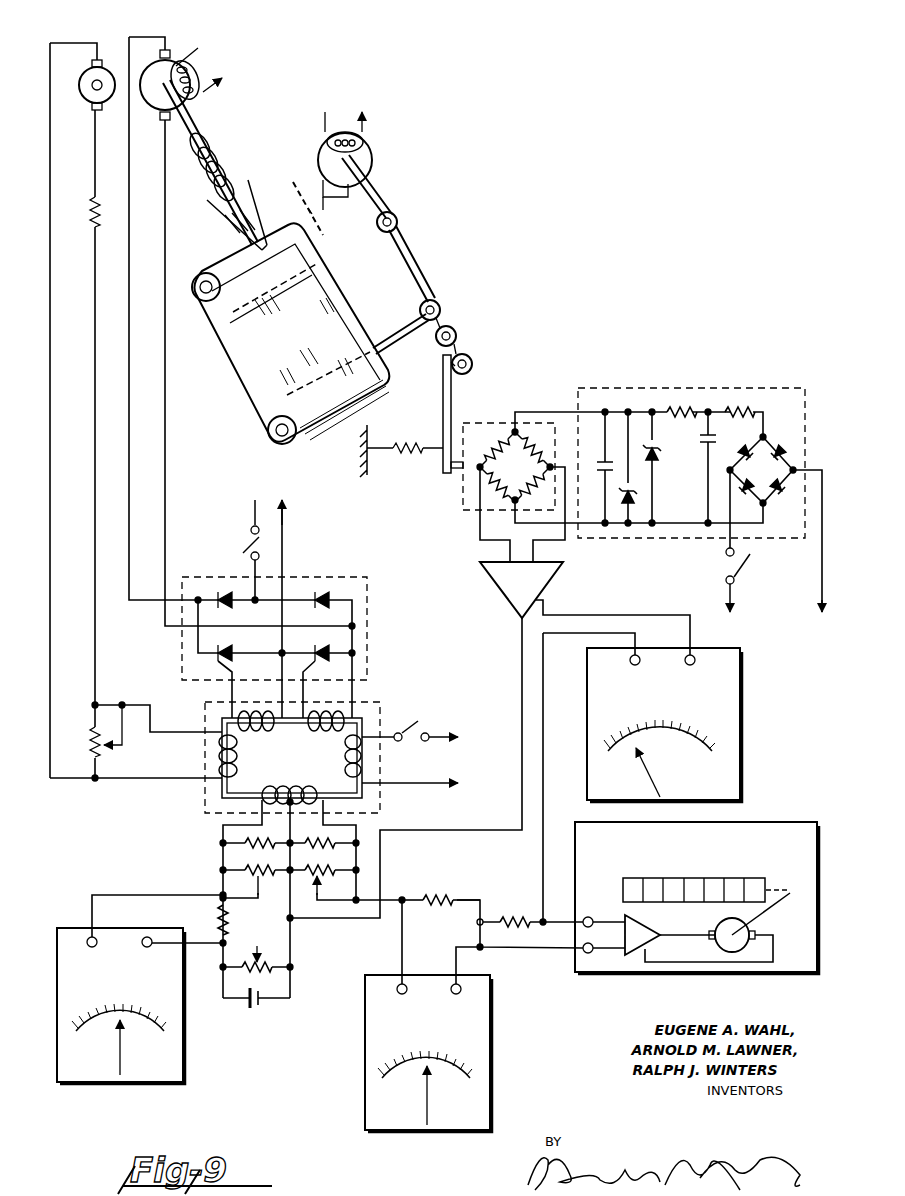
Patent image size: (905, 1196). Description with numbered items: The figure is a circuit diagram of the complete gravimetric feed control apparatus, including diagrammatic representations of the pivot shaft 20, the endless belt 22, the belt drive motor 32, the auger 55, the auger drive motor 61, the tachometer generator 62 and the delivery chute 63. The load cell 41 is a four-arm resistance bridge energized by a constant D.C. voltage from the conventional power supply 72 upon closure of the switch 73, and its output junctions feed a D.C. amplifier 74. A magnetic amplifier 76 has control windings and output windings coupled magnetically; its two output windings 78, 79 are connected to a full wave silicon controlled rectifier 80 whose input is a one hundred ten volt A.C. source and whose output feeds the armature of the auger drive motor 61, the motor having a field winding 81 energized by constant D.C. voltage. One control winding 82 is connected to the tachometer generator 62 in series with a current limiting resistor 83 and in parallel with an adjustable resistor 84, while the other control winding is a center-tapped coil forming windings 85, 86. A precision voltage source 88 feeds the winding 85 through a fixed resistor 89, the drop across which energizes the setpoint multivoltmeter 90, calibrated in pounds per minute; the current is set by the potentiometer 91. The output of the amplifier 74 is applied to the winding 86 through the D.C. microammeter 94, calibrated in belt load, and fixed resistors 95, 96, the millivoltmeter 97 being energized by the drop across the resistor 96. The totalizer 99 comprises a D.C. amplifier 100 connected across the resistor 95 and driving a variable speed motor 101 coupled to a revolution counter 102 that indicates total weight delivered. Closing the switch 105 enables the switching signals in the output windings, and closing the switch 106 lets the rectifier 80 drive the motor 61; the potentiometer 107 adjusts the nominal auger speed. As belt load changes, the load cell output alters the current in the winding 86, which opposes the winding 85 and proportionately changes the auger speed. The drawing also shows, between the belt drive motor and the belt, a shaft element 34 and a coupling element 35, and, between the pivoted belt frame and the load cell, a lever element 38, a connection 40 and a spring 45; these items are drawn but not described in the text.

The pivot shaft 20 is at (410, 270).
The endless belt 22 is at (345, 306).
The belt drive motor 32 is at (320, 155).
The drive shaft 34 is at (303, 188).
The coupling 35 is at (318, 230).
The lever 38 is at (443, 392).
The connection to bridge 40 is at (450, 478).
The load cell 41 is at (512, 422).
The spring 45 is at (404, 440).
The auger 55 is at (222, 165).
The auger drive motor 61 is at (180, 52).
The tachometer generator 62 is at (103, 57).
The delivery chute 63 is at (222, 226).
The power supply 72 is at (697, 388).
The switch 73 is at (722, 566).
The D.C. amplifier 74 is at (552, 580).
The magnetic amplifier 76 is at (385, 708).
The output winding 78 is at (278, 730).
The output winding 79 is at (322, 730).
The full wave silicon controlled rectifier 80 is at (328, 576).
The field winding 81 is at (190, 72).
The control winding 82 is at (218, 750).
The current limiting resistor 83 is at (92, 214).
The adjustable resistor 84 is at (82, 752).
The control winding 85 is at (268, 803).
The control winding 86 is at (318, 805).
The precision voltage source 88 is at (253, 1010).
The fixed resistor 89 is at (216, 928).
The D.C. multivoltmeter 90 is at (70, 926).
The potentiometer 91 is at (272, 963).
The D.C. microammeter 94 is at (742, 664).
The fixed resistor 95 is at (512, 912).
The fixed resistor 96 is at (446, 896).
The millivoltmeter 97 is at (493, 997).
The totalizer 99 is at (812, 824).
The D.C. amplifier 100 is at (635, 958).
The variable speed motor 101 is at (730, 955).
The revolution counter 102 is at (760, 902).
The switch 105 is at (412, 728).
The switch 106 is at (240, 550).
The potentiometer 107 is at (266, 878).